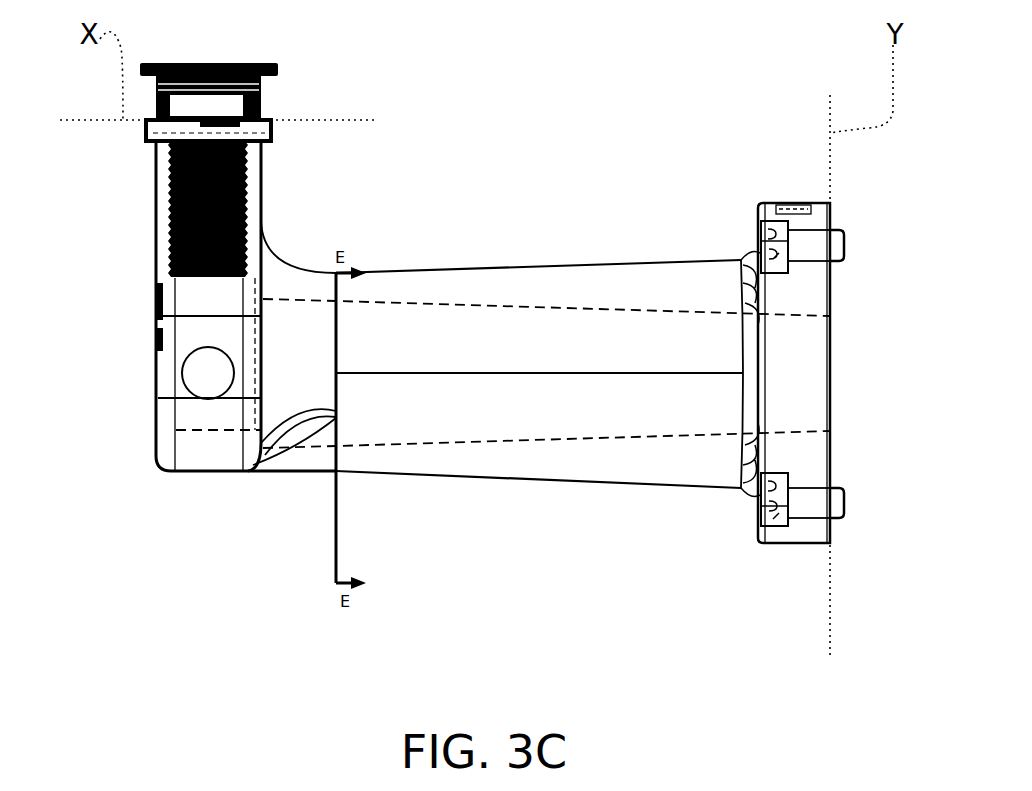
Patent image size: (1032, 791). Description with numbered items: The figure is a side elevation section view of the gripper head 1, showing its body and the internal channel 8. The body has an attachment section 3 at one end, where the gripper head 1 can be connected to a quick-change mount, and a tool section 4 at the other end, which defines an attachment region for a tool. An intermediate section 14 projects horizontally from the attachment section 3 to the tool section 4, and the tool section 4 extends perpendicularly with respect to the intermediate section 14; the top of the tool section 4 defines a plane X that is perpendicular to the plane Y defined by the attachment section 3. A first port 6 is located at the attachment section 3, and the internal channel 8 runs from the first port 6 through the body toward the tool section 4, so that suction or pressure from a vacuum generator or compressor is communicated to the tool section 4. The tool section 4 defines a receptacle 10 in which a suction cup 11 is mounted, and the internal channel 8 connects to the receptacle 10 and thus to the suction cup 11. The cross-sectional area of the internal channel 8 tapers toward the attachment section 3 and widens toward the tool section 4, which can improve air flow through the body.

The gripper head 1 is at (508, 137).
The attachment section 3 is at (785, 545).
The tool section 4 is at (140, 147).
The first port 6 is at (833, 383).
The internal channel 8 is at (565, 348).
The receptacle 10 is at (243, 164).
The suction cup 11 is at (258, 89).
The intermediate section 14 is at (272, 545).